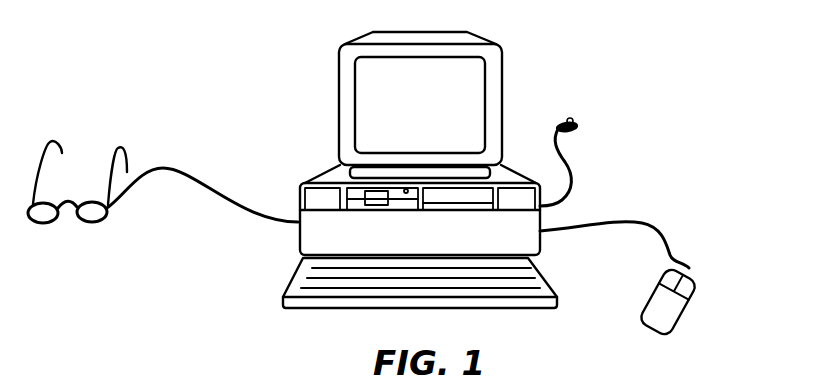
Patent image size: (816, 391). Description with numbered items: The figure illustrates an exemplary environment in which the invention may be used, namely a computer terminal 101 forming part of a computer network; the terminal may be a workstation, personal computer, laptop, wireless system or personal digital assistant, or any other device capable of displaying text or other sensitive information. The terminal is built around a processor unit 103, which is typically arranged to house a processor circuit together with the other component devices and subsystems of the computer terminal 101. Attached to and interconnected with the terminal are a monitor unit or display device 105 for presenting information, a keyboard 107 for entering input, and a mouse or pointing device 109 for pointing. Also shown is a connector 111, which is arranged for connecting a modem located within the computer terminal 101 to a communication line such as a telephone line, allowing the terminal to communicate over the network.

The computer terminal 101 is at (402, 184).
The processor unit 103 is at (298, 190).
The monitor unit or display device 105 is at (340, 112).
The keyboard 107 is at (293, 273).
The mouse or pointing device 109 is at (698, 305).
The connector 111 is at (568, 112).